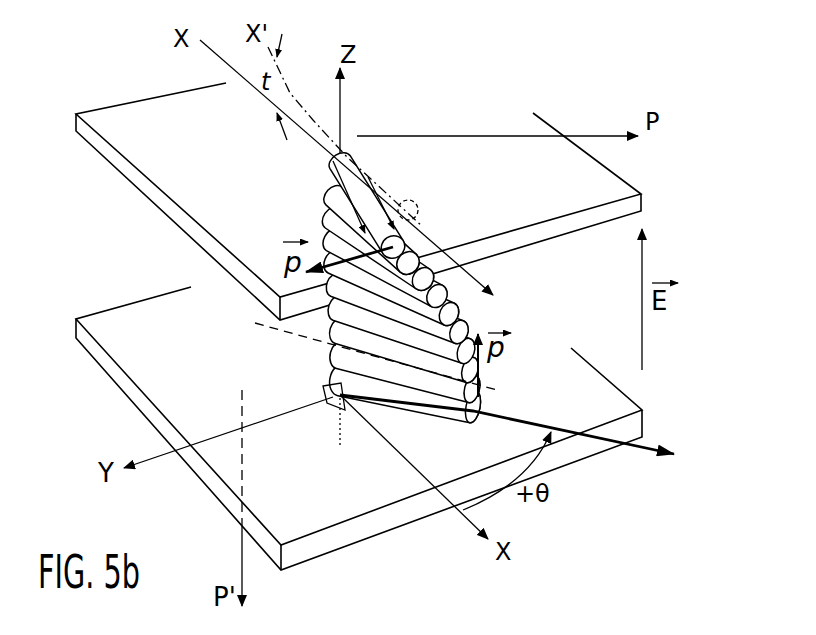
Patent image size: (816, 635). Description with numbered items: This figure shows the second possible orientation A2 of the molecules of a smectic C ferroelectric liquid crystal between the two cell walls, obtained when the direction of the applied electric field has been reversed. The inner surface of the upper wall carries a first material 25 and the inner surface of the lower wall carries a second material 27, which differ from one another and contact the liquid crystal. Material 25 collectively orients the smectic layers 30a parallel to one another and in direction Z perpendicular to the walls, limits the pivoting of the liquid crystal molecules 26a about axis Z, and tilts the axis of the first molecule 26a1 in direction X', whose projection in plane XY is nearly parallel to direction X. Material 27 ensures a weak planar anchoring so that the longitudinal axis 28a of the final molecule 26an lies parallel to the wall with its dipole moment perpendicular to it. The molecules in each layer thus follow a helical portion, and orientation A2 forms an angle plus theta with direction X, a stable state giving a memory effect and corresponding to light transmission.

The first material 25 is at (106, 115).
The second material 27 is at (97, 322).
The liquid crystal molecules 26a is at (442, 273).
The first molecule 26a1 is at (331, 163).
The final molecule 26an is at (398, 402).
The longitudinal axis 28a is at (325, 347).
The smectic layers 30a is at (426, 244).
The second orientation A2 is at (648, 449).